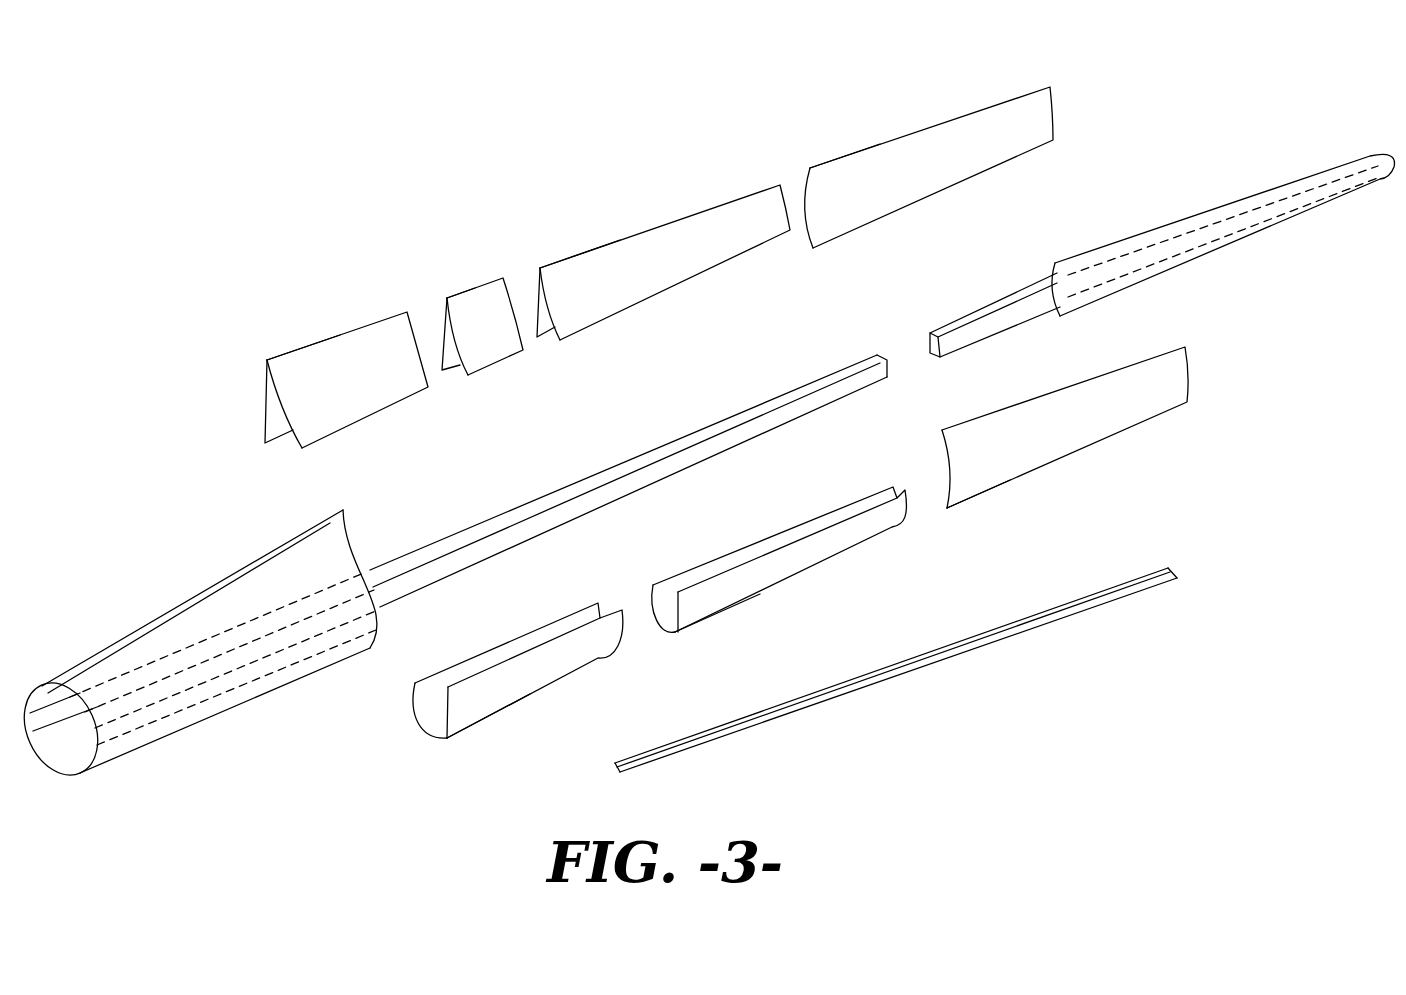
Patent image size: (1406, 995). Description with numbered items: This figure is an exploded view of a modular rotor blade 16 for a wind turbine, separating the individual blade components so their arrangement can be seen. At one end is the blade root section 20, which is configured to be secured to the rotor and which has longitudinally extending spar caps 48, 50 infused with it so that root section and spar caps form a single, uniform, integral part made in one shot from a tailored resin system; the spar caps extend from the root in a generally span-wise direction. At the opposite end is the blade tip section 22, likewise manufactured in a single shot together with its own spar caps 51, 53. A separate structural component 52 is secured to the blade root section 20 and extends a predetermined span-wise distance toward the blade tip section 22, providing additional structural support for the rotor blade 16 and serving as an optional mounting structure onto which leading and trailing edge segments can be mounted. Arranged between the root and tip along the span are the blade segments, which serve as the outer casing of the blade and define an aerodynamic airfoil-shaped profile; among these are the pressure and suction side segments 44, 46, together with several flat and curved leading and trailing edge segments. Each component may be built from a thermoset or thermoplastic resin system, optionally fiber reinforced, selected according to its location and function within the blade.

The modular rotor blade 16 is at (1161, 58).
The blade root section 20 is at (194, 645).
The blade tip section 22 is at (1233, 243).
The pressure side segment 44 is at (929, 149).
The suction side segment 46 is at (1065, 441).
The spar cap 48 is at (428, 551).
The spar cap 50 is at (628, 478).
The spar cap 51 is at (993, 317).
The structural component 52 is at (896, 670).
The spar cap 53 is at (983, 337).